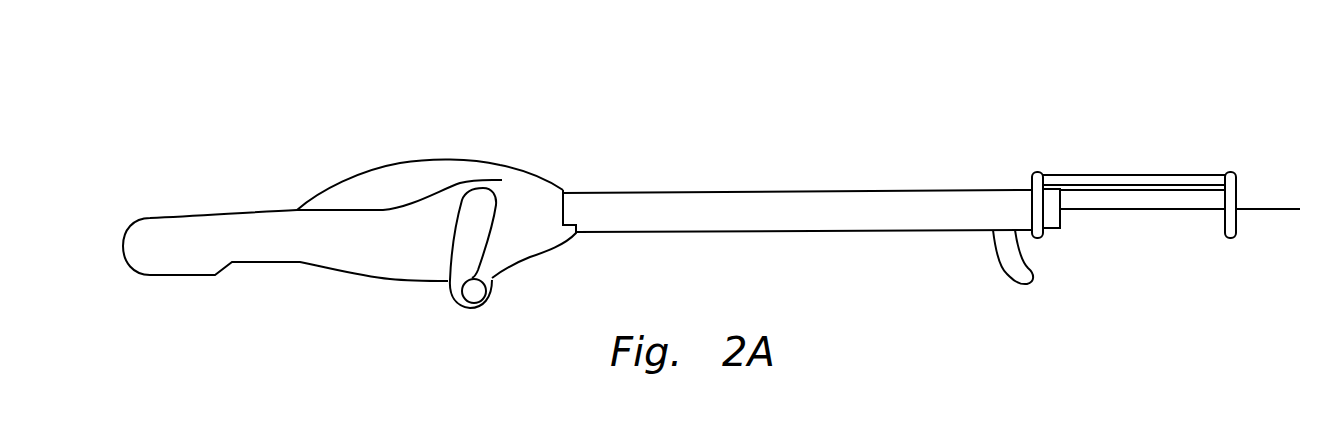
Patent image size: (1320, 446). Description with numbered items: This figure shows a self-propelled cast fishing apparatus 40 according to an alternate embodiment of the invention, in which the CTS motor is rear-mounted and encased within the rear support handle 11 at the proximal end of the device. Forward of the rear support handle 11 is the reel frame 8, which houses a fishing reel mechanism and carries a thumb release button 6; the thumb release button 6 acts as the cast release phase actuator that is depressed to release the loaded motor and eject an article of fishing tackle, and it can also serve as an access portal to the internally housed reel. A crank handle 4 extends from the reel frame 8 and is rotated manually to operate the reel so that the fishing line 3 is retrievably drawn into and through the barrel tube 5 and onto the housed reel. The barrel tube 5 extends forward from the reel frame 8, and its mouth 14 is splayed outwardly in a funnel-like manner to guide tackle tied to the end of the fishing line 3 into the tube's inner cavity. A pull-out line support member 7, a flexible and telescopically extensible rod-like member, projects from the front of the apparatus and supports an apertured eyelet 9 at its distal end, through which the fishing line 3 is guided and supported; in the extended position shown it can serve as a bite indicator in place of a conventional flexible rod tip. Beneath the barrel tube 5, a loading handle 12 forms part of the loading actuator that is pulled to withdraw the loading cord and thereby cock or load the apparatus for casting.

The surgical instrument 40 is at (772, 116).
The rear support handle 11 is at (157, 218).
The thumb release button 6 is at (355, 180).
The reel frame 8 is at (533, 176).
The crank handle 4 is at (448, 302).
The barrel tube 5 is at (827, 190).
The pull-out line support member 7 is at (1125, 173).
The apertured eyelet 9 is at (1237, 190).
The fishing line 3 is at (1183, 210).
The mouth 14 is at (1063, 230).
The loading handle 12 is at (1005, 274).